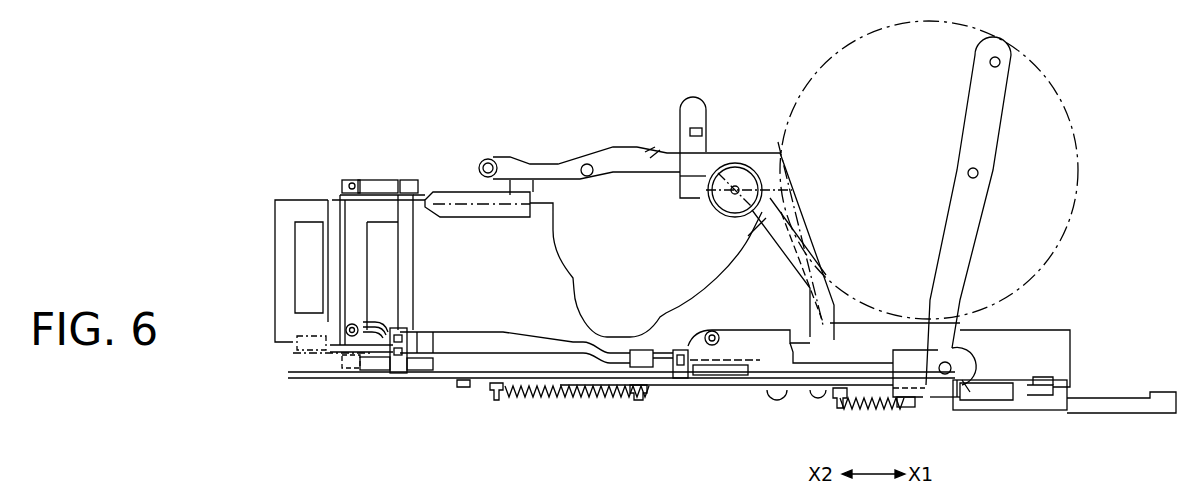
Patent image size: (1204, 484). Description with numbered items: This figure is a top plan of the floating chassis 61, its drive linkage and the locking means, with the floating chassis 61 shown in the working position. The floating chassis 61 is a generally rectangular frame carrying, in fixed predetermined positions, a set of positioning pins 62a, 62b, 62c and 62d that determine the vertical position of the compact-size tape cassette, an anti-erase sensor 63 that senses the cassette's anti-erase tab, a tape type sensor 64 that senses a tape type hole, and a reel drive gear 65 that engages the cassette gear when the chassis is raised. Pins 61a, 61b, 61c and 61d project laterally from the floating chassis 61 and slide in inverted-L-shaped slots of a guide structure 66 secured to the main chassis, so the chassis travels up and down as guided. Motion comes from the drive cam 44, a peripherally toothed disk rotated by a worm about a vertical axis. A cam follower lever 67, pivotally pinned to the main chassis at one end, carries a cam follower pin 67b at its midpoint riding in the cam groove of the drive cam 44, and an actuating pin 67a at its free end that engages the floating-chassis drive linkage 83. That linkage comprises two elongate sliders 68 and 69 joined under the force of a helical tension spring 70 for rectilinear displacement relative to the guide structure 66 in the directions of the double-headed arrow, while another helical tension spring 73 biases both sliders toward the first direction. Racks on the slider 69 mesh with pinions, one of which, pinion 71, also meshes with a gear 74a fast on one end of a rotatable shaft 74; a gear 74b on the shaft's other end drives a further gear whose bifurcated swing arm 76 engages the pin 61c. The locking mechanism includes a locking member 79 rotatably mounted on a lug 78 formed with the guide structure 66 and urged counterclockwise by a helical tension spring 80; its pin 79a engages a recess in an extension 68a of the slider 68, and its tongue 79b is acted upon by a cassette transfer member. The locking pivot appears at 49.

The drive cam 44 is at (1058, 108).
The pin 49 is at (999, 58).
The floating chassis 61 is at (665, 166).
The pin 61a is at (362, 326).
The pin 61b is at (716, 376).
The pin 61c is at (350, 180).
The pin 61d is at (705, 145).
The positioning pin 62a is at (336, 360).
The positioning pin 62b is at (720, 336).
The positioning pin 62c is at (490, 159).
The positioning pin 62d is at (588, 177).
The anti-erase sensor 63 is at (397, 375).
The tape type sensor 64 is at (681, 380).
The reel drive gear 65 is at (712, 210).
The guide structure 66 is at (288, 344).
The cam follower lever 67 is at (975, 222).
The actuating pin 67a is at (950, 360).
The cam follower pin 67b is at (978, 174).
The slider 68 is at (836, 396).
The extension 68a is at (930, 392).
The slider 69 is at (652, 393).
The helical tension spring 70 is at (862, 404).
The pinion 71 is at (360, 372).
The helical tension spring 73 is at (562, 398).
The rotatable shaft 74 is at (413, 277).
The gear 74a is at (412, 373).
The gear 74b is at (415, 186).
The bifurcated swing arm 76 is at (383, 180).
The lug 78 is at (1037, 378).
The locking member 79 is at (1095, 410).
The pin 79a is at (965, 388).
The tongue 79b is at (1162, 392).
The helical tension spring 80 is at (1012, 398).
The floating-chassis drive linkage 83 is at (532, 413).